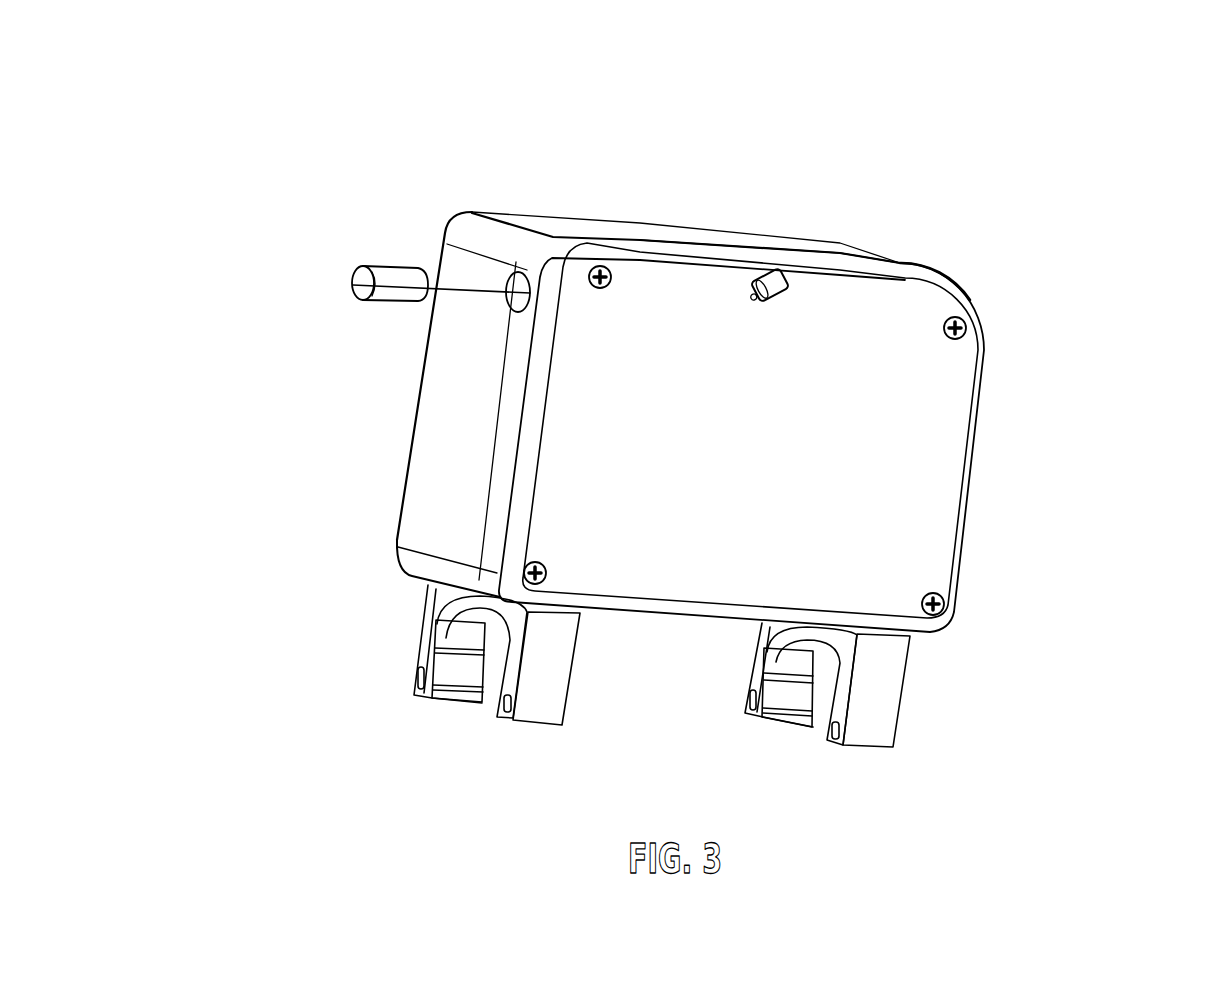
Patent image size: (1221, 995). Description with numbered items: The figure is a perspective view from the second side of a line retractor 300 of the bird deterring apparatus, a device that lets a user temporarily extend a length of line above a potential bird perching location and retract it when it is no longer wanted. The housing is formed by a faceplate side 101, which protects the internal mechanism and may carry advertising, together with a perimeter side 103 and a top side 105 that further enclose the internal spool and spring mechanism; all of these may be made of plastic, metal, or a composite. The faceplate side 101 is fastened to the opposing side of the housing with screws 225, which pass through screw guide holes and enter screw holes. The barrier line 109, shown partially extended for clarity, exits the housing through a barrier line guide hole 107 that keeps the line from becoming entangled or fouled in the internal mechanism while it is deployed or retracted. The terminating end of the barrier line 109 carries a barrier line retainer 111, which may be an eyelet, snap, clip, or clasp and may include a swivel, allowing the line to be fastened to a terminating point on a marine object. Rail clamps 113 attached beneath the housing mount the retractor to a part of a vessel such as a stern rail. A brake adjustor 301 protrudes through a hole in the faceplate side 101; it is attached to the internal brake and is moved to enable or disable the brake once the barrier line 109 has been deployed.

The sensor assembly 300 is at (317, 110).
The faceplate side 101 is at (837, 390).
The perimeter side 103 is at (457, 420).
The top side 105 is at (698, 233).
The barrier line guide hole 107 is at (512, 272).
The barrier line 109 is at (468, 289).
The barrier line retainer 111 is at (400, 266).
The rail clamp 113 is at (547, 683).
The screw 225 is at (603, 257).
The brake adjustor 301 is at (793, 273).